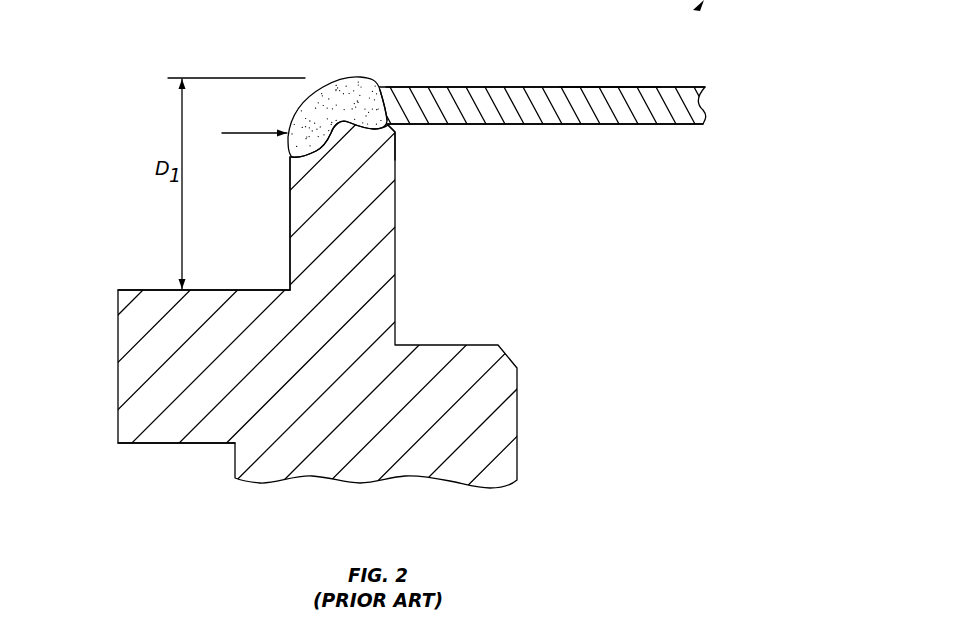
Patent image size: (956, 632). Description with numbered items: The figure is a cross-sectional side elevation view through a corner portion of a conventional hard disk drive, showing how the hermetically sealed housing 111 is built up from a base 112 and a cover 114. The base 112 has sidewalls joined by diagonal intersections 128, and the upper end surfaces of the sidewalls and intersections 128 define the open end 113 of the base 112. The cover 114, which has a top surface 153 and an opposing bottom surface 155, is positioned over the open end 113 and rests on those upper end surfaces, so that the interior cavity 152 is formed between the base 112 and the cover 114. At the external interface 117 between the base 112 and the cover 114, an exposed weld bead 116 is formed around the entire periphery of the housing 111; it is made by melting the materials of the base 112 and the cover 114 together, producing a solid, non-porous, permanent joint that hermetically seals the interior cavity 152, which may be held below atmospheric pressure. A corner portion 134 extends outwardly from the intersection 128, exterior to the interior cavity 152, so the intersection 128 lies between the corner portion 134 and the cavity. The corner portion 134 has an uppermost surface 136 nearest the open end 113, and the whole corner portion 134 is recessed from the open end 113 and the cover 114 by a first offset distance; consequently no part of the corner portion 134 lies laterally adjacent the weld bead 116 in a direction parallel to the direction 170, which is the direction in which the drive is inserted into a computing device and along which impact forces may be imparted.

The hermetically sealed housing 111 is at (610, 78).
The base 112 is at (335, 480).
The open end 113 is at (398, 127).
The cover 114 is at (503, 99).
The weld bead 116 is at (360, 100).
The external interface 117 is at (393, 100).
The intersection 128 is at (290, 215).
The corner portion 134 is at (135, 445).
The uppermost surface 136 is at (158, 290).
The interior cavity 152 is at (585, 280).
The top surface 153 is at (655, 87).
The bottom surface 155 is at (553, 124).
The direction 170 is at (257, 133).